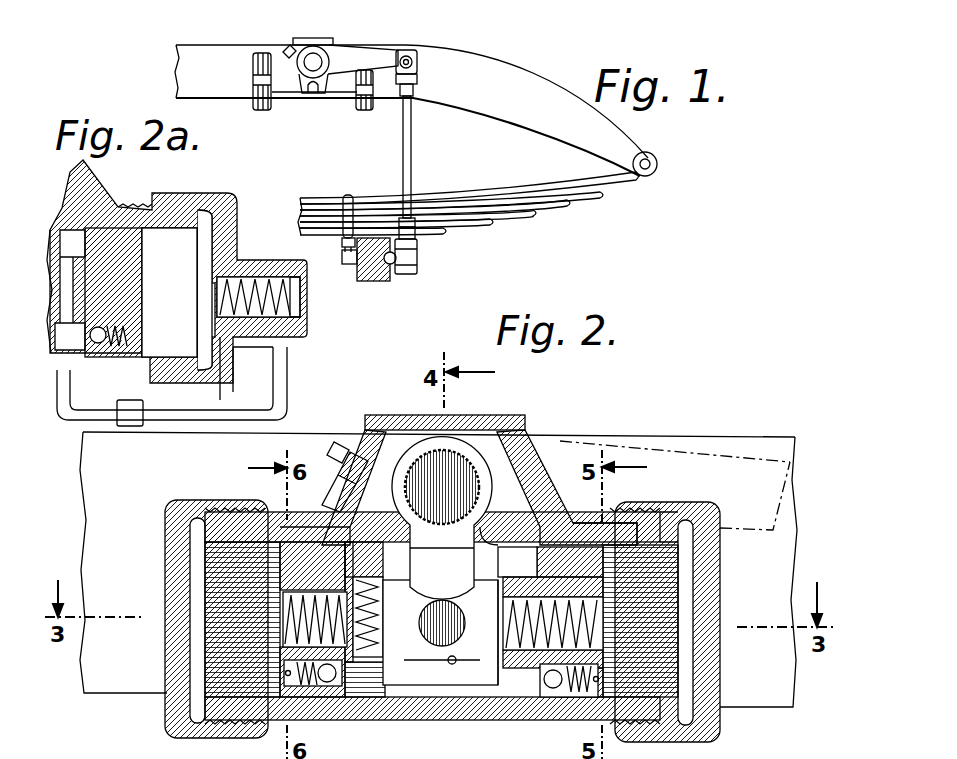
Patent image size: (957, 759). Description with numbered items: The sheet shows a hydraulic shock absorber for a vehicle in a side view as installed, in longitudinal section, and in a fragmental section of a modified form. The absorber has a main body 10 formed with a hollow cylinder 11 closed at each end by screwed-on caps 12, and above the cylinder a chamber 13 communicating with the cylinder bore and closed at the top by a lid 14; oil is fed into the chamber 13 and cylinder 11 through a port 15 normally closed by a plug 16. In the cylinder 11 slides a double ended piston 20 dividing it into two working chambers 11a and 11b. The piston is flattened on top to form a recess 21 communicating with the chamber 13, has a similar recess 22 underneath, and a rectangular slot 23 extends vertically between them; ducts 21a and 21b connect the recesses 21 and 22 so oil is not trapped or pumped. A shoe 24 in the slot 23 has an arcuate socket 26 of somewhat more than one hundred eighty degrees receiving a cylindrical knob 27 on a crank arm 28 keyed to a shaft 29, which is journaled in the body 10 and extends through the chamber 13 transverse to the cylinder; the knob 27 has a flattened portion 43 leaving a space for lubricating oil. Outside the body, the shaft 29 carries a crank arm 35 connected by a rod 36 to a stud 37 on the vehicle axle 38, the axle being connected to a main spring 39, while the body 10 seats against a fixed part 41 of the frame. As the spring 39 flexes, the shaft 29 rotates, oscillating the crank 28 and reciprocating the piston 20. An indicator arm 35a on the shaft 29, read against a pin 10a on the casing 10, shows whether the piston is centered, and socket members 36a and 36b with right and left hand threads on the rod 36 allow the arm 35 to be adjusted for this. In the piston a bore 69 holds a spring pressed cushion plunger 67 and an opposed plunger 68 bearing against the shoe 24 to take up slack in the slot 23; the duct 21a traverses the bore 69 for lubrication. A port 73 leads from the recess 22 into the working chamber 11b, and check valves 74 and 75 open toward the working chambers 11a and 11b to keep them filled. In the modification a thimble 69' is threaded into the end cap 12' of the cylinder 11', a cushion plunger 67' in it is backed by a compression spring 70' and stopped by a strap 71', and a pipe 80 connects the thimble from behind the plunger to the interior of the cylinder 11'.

In FIG. 2, the main body 10 is at (556, 523).
In FIG. 1, the pin 10a is at (314, 98).
In FIG. 1, the hollow cylinder portion 11 is at (299, 129).
In FIG. 2, the hollow cylinder portion 11 is at (432, 633).
In FIG. 2, the working chamber 11a is at (650, 647).
In FIG. 2, the working chamber 11b is at (237, 632).
In FIG. 2A, the cylinder 11' is at (177, 271).
In FIG. 1, the cap 12 is at (231, 107).
In FIG. 2, the cap 12 is at (450, 621).
In FIG. 2A, the end cap 12' is at (237, 285).
In FIG. 2, the chamber 13 is at (540, 482).
In FIG. 1, the lid 14 is at (311, 38).
In FIG. 2, the lid 14 is at (478, 418).
In FIG. 2, the port 15 is at (360, 450).
In FIG. 1, the plug 16 is at (283, 52).
In FIG. 2, the plug 16 is at (335, 445).
In FIG. 2, the double ended piston 20 is at (678, 532).
In FIG. 2, the recess 21 is at (345, 545).
In FIG. 2, the duct 21a is at (545, 590).
In FIG. 2, the duct 21b is at (400, 577).
In FIG. 2, the recess 22 is at (365, 700).
In FIG. 2, the slot 23 is at (395, 555).
In FIG. 2, the shoe 24 is at (400, 692).
In FIG. 2, the arcuate socket 26 is at (432, 674).
In FIG. 2, the cylindrical knob 27 is at (478, 680).
In FIG. 2, the crank arm 28 is at (478, 577).
In FIG. 1, the shaft 29 is at (320, 68).
In FIG. 2, the shaft 29 is at (442, 462).
In FIG. 1, the crank arm 35 is at (346, 47).
In FIG. 2, the crank arm 35 is at (690, 452).
In FIG. 1, the indicator arm 35a is at (325, 94).
In FIG. 1, the rod 36 is at (412, 141).
In FIG. 1, the socket member 36a is at (419, 58).
In FIG. 1, the socket member 36b is at (417, 256).
In FIG. 1, the stud 37 is at (390, 268).
In FIG. 1, the axle 38 is at (370, 284).
In FIG. 1, the main spring 39 is at (495, 198).
In FIG. 1, the fixed part of the vehicle frame 41 is at (490, 80).
In FIG. 2, the fixed part of the vehicle frame 41 is at (438, 569).
In FIG. 2, the flattened portion 43 is at (455, 680).
In FIG. 2, the cushion plunger 67 is at (606, 678).
In FIG. 2A, the cushion plunger 67' is at (173, 292).
In FIG. 2, the opposed plunger 68 is at (485, 612).
In FIG. 2, the bore 69 is at (582, 622).
In FIG. 2A, the thimble 69' is at (315, 297).
In FIG. 2A, the compression spring 70' is at (254, 276).
In FIG. 2A, the strap 71' is at (150, 292).
In FIG. 2, the port 73 is at (290, 670).
In FIG. 2, the check-valve 74 is at (590, 699).
In FIG. 2, the check-valve 75 is at (332, 703).
In FIG. 2A, the pipe 80 is at (287, 369).